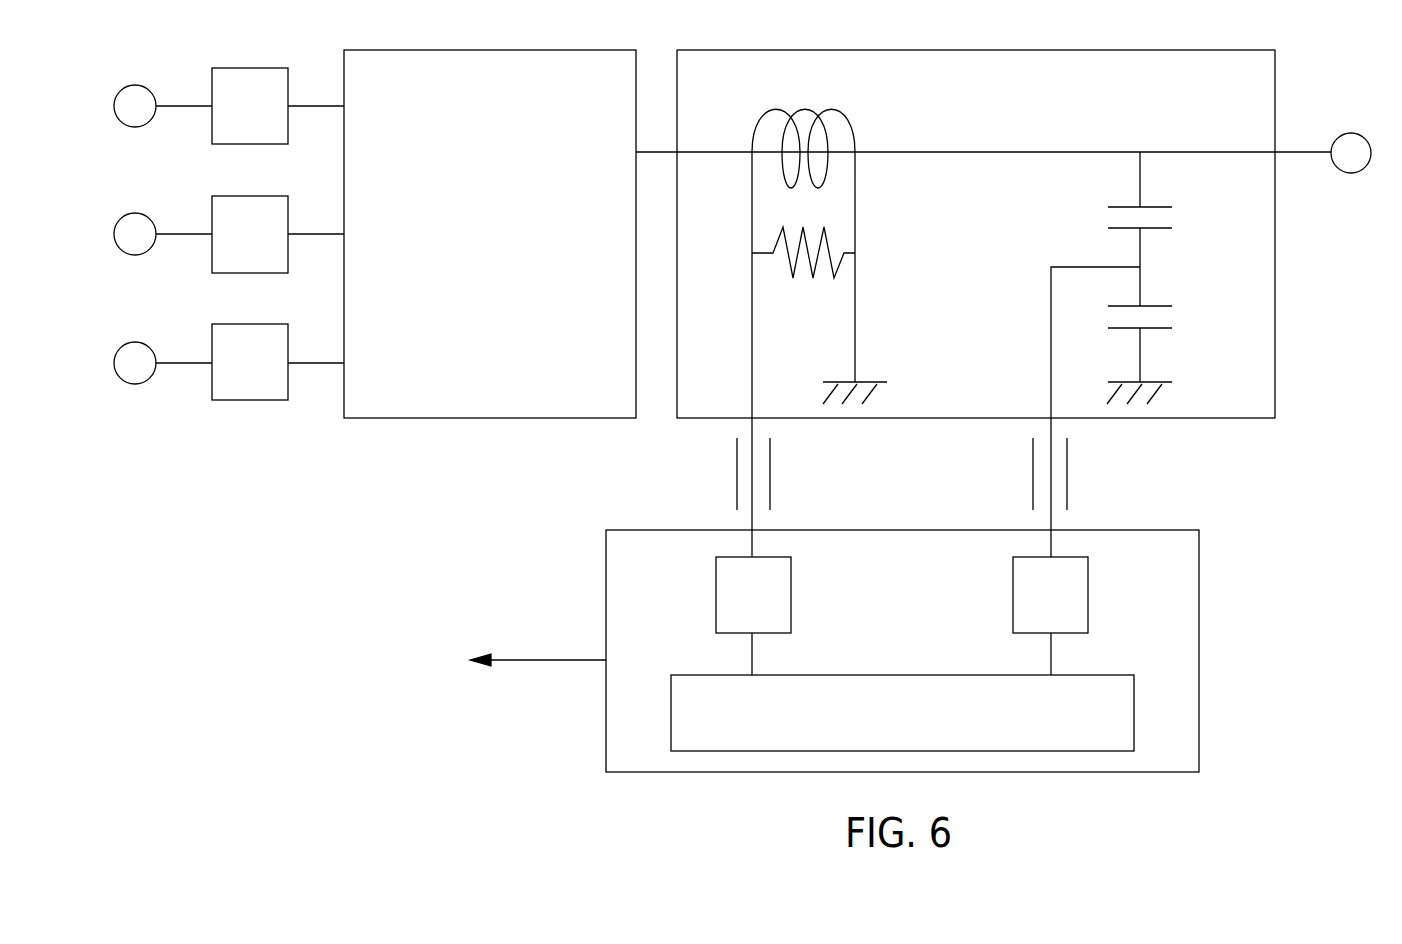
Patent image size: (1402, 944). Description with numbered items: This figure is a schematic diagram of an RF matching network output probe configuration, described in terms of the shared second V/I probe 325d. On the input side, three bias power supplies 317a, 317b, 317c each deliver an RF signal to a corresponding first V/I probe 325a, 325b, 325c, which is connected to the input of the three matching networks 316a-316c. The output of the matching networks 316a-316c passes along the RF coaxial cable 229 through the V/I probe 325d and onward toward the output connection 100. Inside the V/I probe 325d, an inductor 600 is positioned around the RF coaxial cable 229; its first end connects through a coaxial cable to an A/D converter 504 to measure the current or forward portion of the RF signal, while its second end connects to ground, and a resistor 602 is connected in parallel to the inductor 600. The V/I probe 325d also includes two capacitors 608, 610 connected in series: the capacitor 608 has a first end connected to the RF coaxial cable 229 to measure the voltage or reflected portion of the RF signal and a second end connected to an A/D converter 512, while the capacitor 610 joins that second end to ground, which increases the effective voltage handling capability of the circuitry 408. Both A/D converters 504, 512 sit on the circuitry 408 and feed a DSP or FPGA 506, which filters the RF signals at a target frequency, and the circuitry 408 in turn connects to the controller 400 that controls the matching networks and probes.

The bias power supply 317a is at (151, 87).
The bias power supply 317b is at (151, 215).
The bias power supply 317c is at (151, 344).
The V/I probe 325a is at (273, 118).
The V/I probe 325b is at (273, 246).
The V/I probe 325c is at (273, 375).
The matching networks 316a-316c is at (538, 99).
The V/I probe 325d is at (1001, 99).
The RF coaxial cable 229 is at (1068, 150).
The output to device 100 is at (1349, 134).
The inductor 600 is at (776, 112).
The resistor 602 is at (830, 272).
The capacitor 608 is at (1157, 207).
The capacitor 610 is at (1157, 306).
The circuitry 408 is at (1164, 606).
The A/D converter 504 is at (770, 606).
The A/D converter 512 is at (1068, 606).
The DSP or FPGA 506 is at (919, 720).
The controller 400 is at (504, 659).